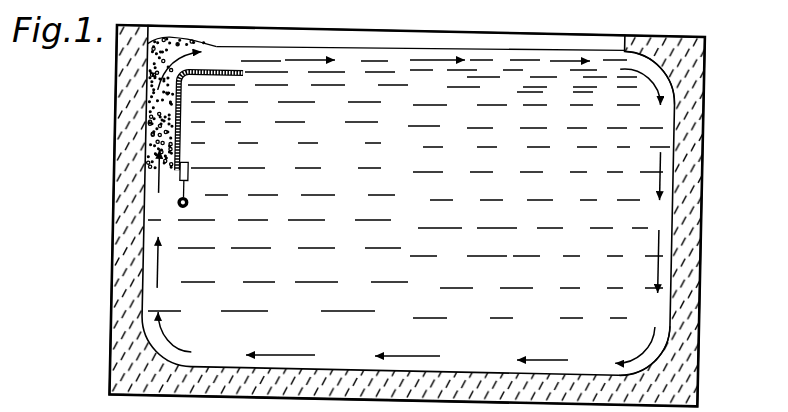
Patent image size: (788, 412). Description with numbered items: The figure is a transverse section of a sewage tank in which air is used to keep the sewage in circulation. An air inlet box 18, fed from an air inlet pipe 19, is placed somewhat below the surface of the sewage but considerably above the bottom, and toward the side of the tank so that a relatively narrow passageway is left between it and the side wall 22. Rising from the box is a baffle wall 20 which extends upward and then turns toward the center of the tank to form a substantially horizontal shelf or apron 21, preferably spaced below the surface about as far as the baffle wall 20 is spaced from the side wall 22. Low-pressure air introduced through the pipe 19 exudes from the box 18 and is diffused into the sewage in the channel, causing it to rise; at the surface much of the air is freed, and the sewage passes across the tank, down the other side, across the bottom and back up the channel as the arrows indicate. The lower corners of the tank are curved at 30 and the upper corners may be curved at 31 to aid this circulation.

The air inlet box 18 is at (60, 147).
The air inlet pipe 19 is at (64, 184).
The baffle wall 20 is at (58, 83).
The shelf or apron 21 is at (219, 89).
The side wall 22 is at (379, 215).
The curved lower corners 30 is at (683, 351).
The curved upper corners 31 is at (685, 78).